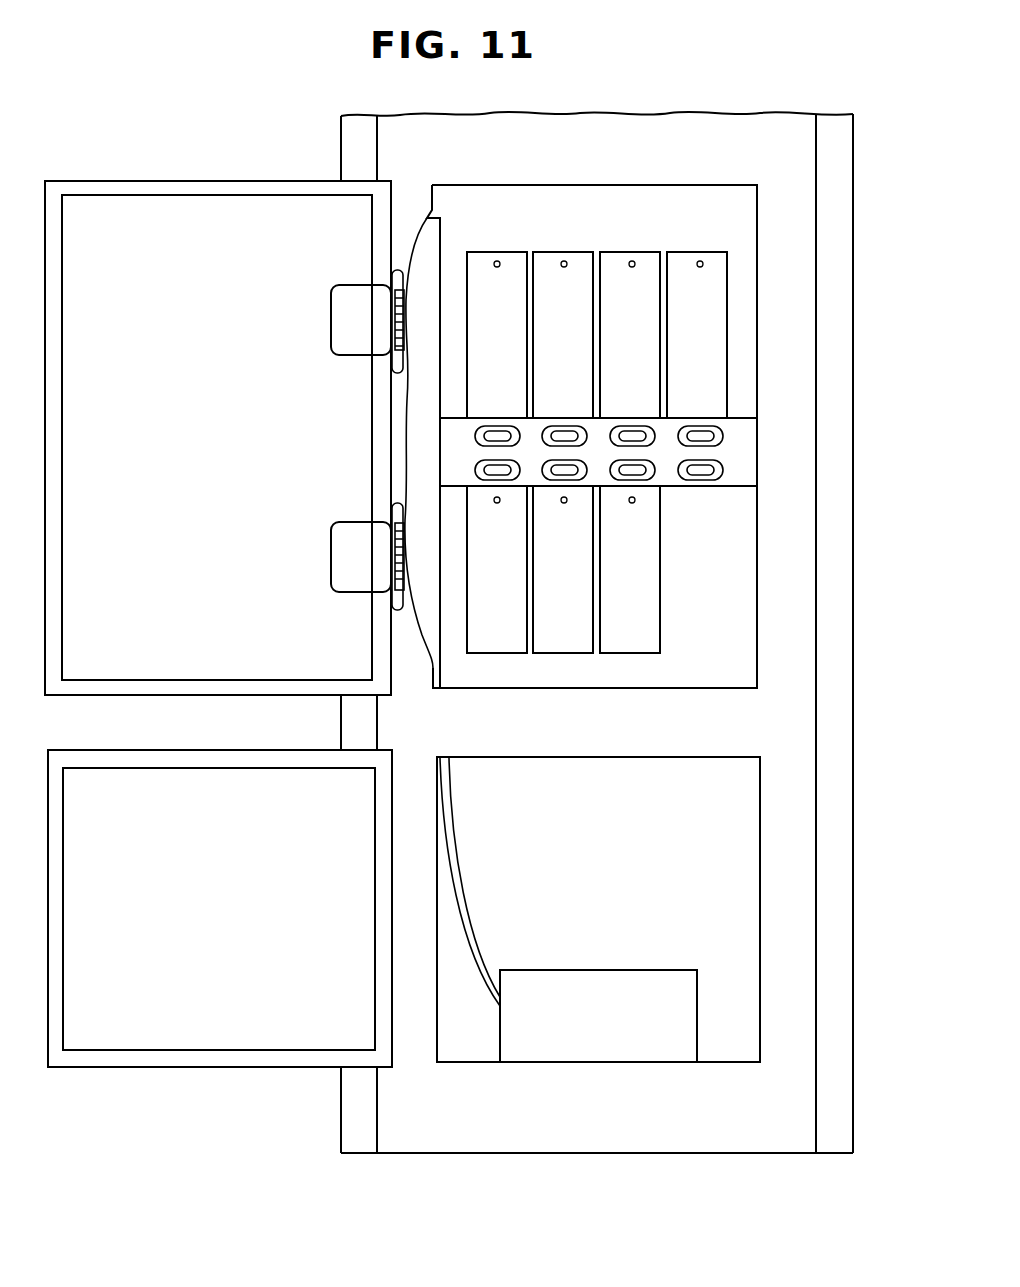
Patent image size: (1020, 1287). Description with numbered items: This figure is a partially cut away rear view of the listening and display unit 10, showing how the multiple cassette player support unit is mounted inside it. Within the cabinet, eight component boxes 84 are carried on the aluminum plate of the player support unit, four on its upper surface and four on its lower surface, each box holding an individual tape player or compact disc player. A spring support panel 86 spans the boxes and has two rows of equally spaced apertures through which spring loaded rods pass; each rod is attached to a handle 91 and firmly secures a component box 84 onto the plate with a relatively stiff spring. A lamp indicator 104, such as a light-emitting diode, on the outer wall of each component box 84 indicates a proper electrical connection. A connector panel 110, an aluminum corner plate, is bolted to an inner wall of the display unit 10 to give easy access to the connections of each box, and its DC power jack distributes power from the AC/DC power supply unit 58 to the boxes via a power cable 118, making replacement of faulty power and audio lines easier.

The listening and display unit 10 is at (848, 152).
The component box 84 is at (727, 284).
The spring support panel 86 is at (676, 484).
The handle 91 is at (708, 476).
The lamp indicator 104 is at (700, 261).
The connector panel 110 is at (434, 233).
The power cable 118 is at (460, 894).
The AC/DC power supply unit 58 is at (690, 992).